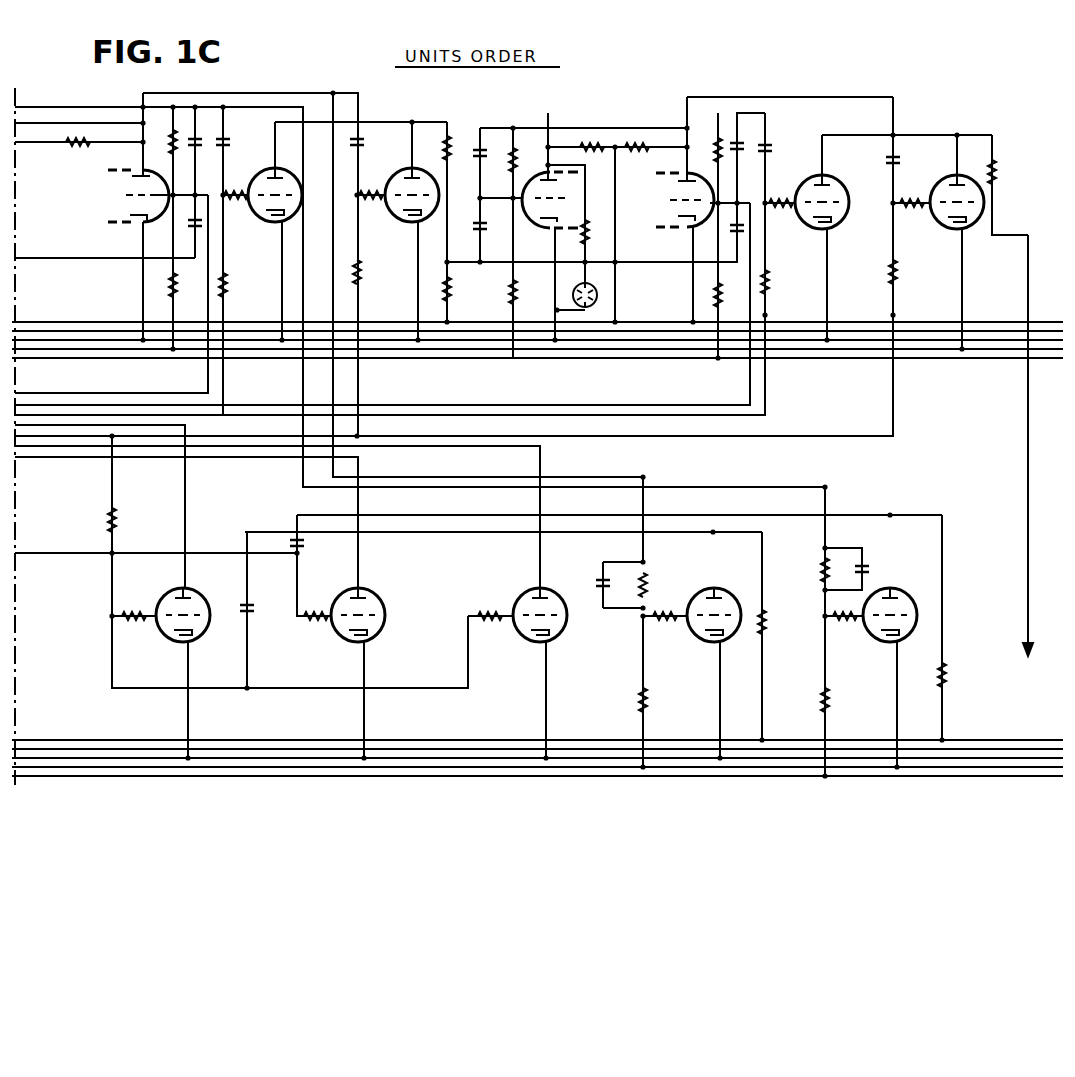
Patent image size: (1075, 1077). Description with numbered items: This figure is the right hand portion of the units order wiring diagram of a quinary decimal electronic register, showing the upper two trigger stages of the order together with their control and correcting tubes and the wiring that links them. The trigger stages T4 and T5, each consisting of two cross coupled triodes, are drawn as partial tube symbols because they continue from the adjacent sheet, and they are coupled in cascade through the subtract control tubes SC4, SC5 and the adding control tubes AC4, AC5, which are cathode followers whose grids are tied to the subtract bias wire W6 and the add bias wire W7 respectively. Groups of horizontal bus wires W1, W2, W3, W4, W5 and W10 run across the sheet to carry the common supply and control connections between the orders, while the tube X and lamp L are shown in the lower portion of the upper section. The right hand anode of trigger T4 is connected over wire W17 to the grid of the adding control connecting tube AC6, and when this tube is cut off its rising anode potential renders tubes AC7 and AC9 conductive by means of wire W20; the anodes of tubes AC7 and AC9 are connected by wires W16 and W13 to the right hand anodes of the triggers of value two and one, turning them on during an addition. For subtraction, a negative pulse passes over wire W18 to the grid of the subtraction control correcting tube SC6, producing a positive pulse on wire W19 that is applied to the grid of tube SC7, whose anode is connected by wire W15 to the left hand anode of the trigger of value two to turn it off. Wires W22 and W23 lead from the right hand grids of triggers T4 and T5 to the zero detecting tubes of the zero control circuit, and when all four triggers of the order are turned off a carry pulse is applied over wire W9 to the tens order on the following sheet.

The wire bus line W1 is at (58, 322).
The wire bus line W2 is at (98, 331).
The wire bus line W3 is at (130, 340).
The wire bus line W4 is at (262, 349).
The wire bus line W5 is at (407, 358).
The subtract bias wire W6 is at (765, 315).
The add bias wire W7 is at (893, 315).
The carry wire W9 is at (1028, 583).
The wire W10 is at (66, 554).
The wire W13 is at (56, 425).
The wire W15 is at (15, 457).
The wire W16 is at (60, 446).
The wire W17 is at (143, 93).
The wire W18 is at (80, 107).
The wire W19 is at (475, 515).
The wire W20 is at (460, 533).
The wire W22 is at (120, 393).
The wire W23 is at (180, 405).
The trigger stage T4 is at (127, 196).
The trigger stage T5 is at (670, 200).
The tube X is at (550, 200).
The lamp L is at (590, 287).
The subtract control tube SC4 is at (262, 216).
The adding control tube AC4 is at (396, 220).
The subtract control tube SC5 is at (808, 223).
The adding control tube AC5 is at (942, 224).
The adding control connecting tube AC9 is at (164, 596).
The subtraction control correcting tube SC7 is at (348, 594).
The adding control connecting tube AC7 is at (515, 597).
The adding control connecting tube AC6 is at (694, 597).
The subtraction control correcting tube SC6 is at (902, 604).